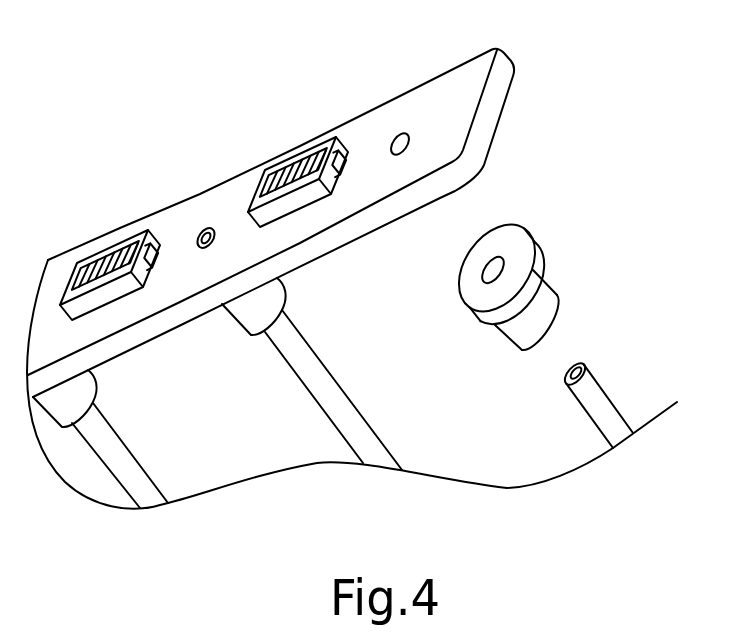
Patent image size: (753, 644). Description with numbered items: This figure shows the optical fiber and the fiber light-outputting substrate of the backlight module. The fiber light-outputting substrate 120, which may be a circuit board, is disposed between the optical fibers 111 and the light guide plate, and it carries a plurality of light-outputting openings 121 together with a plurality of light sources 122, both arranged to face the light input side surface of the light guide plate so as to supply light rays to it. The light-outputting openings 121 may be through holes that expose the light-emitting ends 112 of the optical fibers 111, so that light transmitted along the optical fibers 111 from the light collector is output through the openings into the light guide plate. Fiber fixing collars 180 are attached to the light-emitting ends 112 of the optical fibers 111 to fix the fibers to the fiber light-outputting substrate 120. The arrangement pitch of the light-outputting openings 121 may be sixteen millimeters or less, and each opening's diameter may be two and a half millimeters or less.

The fiber light-outputting substrate 120 is at (493, 102).
The light-outputting opening 121 is at (404, 128).
The light source 122 is at (298, 157).
The light-emitting end 112 is at (210, 230).
The fiber fixing collar 180 is at (535, 256).
The optical fiber 111 is at (593, 390).